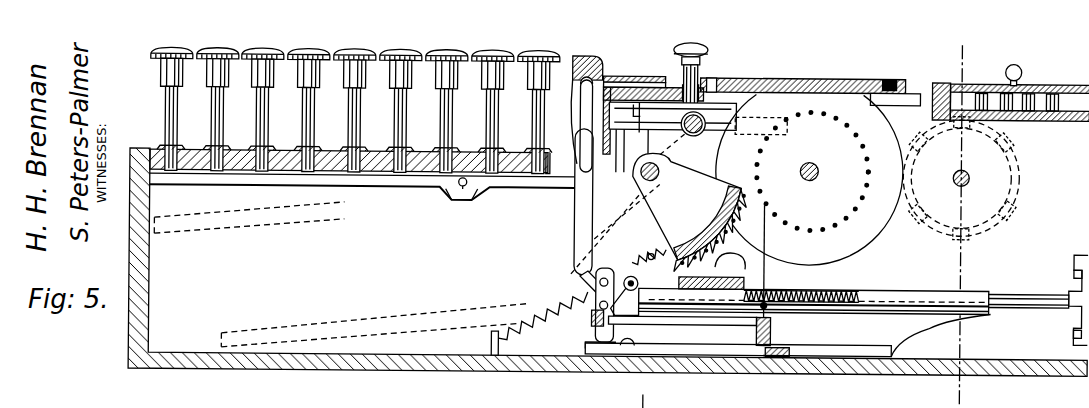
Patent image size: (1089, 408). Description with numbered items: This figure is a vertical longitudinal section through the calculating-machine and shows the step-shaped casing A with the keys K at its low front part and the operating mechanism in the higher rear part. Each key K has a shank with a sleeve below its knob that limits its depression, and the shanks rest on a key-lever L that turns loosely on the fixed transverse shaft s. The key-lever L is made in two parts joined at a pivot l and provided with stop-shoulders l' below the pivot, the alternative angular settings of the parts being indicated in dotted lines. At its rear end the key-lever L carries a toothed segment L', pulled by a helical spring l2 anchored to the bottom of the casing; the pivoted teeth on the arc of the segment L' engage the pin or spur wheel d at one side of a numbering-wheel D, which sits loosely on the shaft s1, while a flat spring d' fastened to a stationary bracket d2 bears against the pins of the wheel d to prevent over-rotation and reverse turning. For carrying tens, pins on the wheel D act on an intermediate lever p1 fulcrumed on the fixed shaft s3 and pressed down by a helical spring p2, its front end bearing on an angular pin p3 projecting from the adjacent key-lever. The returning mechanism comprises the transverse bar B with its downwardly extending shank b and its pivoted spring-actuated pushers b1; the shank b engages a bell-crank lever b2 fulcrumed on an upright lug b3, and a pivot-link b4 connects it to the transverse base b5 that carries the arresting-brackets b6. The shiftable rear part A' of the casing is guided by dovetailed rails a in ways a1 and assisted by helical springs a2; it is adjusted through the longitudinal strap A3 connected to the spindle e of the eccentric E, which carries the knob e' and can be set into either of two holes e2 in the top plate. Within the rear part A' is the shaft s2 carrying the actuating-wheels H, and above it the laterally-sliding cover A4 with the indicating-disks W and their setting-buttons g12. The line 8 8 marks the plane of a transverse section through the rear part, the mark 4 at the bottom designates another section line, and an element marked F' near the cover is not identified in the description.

The step-shaped casing A is at (608, 275).
The keys K is at (343, 110).
The key-lever L is at (361, 195).
The pivot l is at (543, 227).
The shoulders l' is at (467, 204).
The helical spring l2 is at (578, 292).
The toothed segment L' is at (689, 212).
The transverse bar B is at (587, 98).
The shank b is at (575, 227).
The pushers b1 is at (580, 136).
The bell-crank levers b2 is at (584, 276).
The upright lugs b3 is at (607, 270).
The pivot-links b4 is at (624, 300).
The transverse base b5 is at (727, 326).
The arresting-brackets b6 is at (738, 254).
The eccentric E is at (666, 74).
The spindle e is at (724, 72).
The knob or button e' is at (697, 71).
The holes e2 is at (672, 115).
The levers p1 is at (713, 128).
The helical springs p2 is at (625, 109).
The angular pins p3 is at (629, 150).
The fixed transverse shaft s is at (659, 167).
The shaft of the numbering-wheels s1 is at (819, 166).
The shaft s2 is at (970, 171).
The fixed shaft s3 is at (697, 131).
The numbering-wheels D is at (809, 181).
The pin or spur wheel d is at (805, 175).
The flat spring d' is at (771, 285).
The stationary bracket d2 is at (774, 280).
The actuating-wheels H is at (961, 178).
The section line 8 is at (952, 222).
The longitudinal strap A3 is at (773, 74).
The laterally-sliding cover A4 is at (1007, 89).
The shiftable rear part of the casing A' is at (1071, 270).
The stop F' is at (863, 72).
The indicating-disks W is at (1016, 88).
The buttons g12 is at (1014, 65).
The dovetailed rails a is at (1029, 288).
The ways a1 is at (814, 311).
The helical springs a2 is at (829, 286).
The section line 4 is at (633, 400).